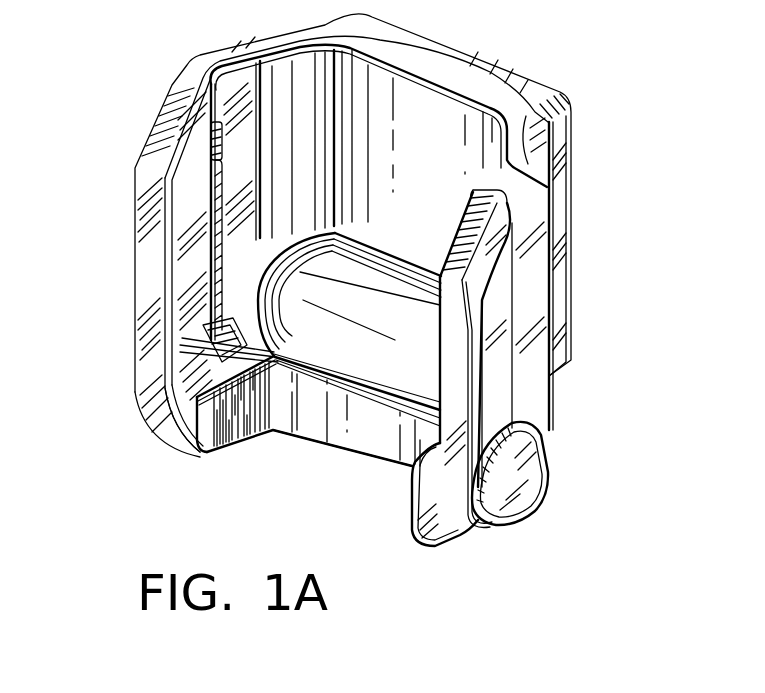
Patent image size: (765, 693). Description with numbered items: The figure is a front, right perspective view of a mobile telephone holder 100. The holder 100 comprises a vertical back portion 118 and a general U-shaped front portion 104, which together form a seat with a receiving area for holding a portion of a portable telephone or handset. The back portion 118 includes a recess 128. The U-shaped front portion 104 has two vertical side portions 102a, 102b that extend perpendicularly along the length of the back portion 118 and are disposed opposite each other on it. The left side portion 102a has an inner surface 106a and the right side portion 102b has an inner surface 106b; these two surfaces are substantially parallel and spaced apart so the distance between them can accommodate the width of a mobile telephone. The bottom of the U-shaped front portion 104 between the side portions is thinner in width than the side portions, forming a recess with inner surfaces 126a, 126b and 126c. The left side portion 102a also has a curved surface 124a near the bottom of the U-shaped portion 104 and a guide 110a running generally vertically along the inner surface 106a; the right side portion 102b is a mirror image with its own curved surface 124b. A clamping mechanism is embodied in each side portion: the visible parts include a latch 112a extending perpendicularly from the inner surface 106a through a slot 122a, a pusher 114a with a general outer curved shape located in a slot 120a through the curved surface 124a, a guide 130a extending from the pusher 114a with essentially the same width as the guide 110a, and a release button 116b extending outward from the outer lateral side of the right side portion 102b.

The holder 100 is at (575, 53).
The left side portion 102a is at (137, 297).
The right side portion 102b is at (470, 532).
The U-shaped front portion 104 is at (316, 432).
The inner surface 106a is at (183, 233).
The inner surface 106b is at (432, 368).
The guide 110a is at (213, 250).
The latch 112a is at (208, 134).
The pusher 114a is at (200, 342).
The release button 116b is at (537, 466).
The back portion 118 is at (575, 140).
The slot 120a is at (186, 441).
The slot 122a is at (212, 149).
The curved surface 124a is at (188, 366).
The curved surface 124b is at (412, 462).
The inner surface 126a is at (206, 457).
The inner surface 126b is at (406, 520).
The inner surface 126c is at (364, 452).
The recess 128 is at (437, 100).
The guide 130a is at (250, 430).